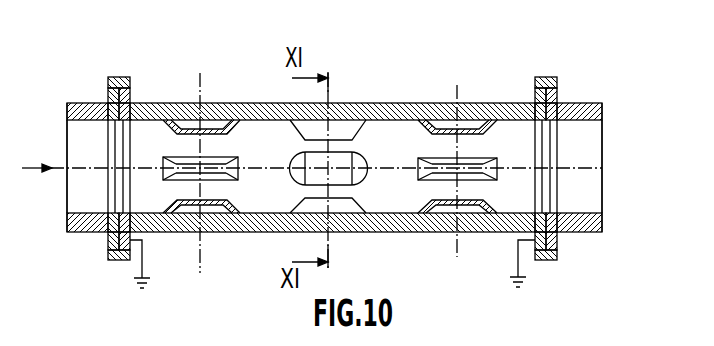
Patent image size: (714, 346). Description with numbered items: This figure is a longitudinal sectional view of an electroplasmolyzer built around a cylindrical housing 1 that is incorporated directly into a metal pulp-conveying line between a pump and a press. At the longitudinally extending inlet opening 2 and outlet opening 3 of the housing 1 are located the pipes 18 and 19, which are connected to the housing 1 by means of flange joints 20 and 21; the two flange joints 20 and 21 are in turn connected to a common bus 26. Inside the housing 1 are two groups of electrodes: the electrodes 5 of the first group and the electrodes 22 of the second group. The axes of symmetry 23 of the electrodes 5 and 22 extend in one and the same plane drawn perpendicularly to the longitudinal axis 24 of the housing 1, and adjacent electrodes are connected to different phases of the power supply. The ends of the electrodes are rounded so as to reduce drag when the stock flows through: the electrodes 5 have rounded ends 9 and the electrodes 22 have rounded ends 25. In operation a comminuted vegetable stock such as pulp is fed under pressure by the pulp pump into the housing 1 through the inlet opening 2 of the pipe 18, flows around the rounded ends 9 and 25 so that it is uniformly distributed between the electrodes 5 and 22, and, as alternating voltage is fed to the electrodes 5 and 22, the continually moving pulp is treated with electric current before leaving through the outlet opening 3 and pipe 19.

The housing 1 is at (143, 103).
The inlet opening 2 is at (66, 147).
The outlet opening 3 is at (593, 143).
The electrodes 5 is at (215, 132).
The rounded ends 9 is at (297, 176).
The pipe 18 is at (78, 103).
The pipe 19 is at (575, 105).
The flange joint 20 is at (120, 77).
The flange joint 21 is at (546, 77).
The electrodes 22 is at (438, 160).
The axes of symmetry 23 is at (200, 273).
The longitudinal axis 24 is at (600, 170).
The rounded ends 25 is at (287, 103).
The common bus 26 is at (140, 270).